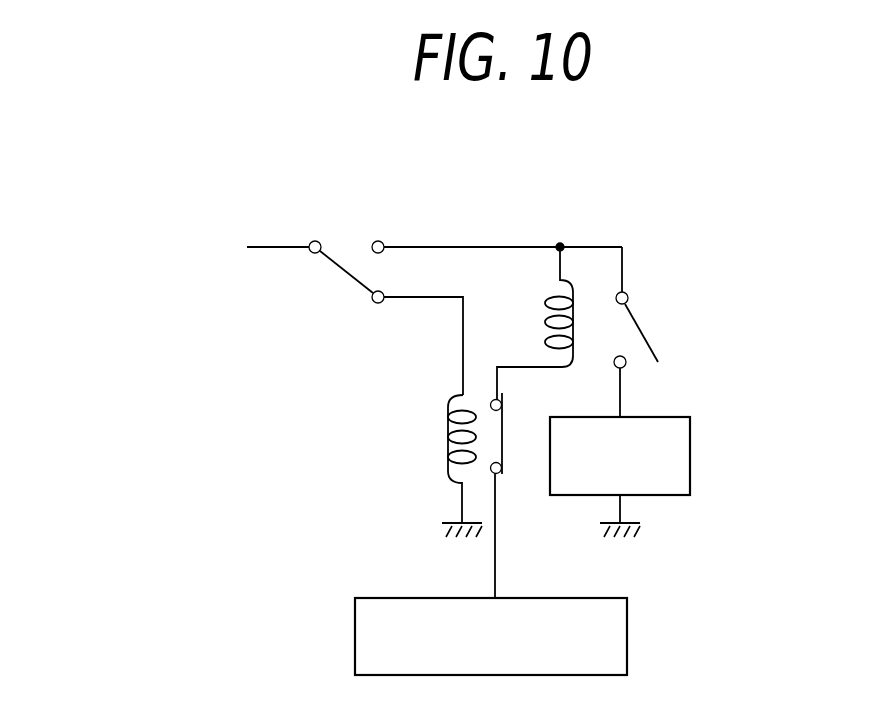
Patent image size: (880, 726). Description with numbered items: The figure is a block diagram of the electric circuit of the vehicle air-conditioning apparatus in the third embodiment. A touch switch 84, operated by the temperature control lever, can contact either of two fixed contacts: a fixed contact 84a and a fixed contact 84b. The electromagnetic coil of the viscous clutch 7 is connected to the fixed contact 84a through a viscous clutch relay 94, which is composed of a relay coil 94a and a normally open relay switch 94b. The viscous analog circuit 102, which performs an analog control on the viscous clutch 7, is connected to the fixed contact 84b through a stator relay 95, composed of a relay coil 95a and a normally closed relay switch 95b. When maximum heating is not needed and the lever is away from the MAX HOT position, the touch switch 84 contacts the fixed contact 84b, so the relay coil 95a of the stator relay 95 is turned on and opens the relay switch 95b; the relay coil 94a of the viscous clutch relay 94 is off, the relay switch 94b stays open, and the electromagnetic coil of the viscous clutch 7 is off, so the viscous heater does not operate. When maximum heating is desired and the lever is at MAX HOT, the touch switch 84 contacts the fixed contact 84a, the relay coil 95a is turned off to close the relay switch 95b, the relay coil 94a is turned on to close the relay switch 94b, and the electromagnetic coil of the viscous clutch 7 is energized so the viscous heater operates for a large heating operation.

The touch switch 84 is at (350, 274).
The fixed contact 84a is at (382, 243).
The fixed contact 84b is at (381, 303).
The viscous clutch relay 94 is at (605, 314).
The relay coil 94a is at (545, 323).
The relay switch 94b is at (645, 338).
The stator relay 95 is at (435, 495).
The relay coil 95a is at (448, 430).
The relay switch 95b is at (527, 495).
The viscous clutch 7 is at (690, 452).
The viscous analog circuit 102 is at (355, 640).